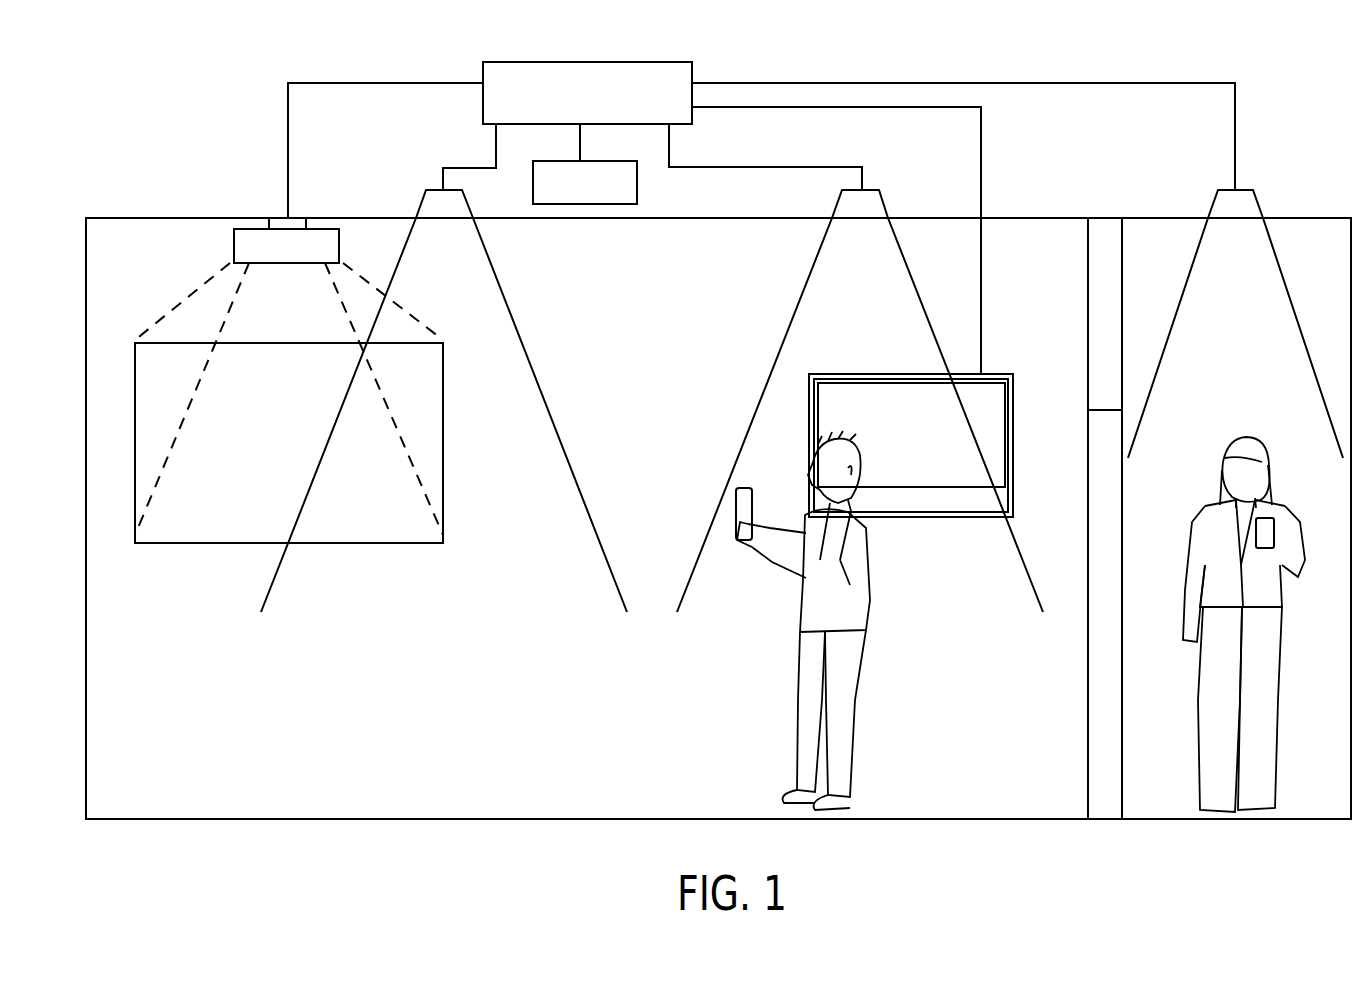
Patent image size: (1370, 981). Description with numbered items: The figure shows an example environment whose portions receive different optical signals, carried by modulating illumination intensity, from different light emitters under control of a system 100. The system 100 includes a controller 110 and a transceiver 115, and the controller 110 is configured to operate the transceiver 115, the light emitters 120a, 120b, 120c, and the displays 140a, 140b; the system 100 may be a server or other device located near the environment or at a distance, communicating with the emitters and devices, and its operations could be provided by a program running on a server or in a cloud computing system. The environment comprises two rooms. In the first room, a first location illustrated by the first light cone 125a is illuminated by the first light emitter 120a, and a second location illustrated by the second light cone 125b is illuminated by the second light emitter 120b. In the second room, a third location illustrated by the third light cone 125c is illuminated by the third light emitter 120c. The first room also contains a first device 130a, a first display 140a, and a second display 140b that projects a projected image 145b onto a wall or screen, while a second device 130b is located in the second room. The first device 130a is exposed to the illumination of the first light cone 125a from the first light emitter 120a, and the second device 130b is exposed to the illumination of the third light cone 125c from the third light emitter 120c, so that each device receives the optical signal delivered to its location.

The system 100 is at (762, 104).
The controller 110 is at (602, 107).
The transceiver 115 is at (603, 197).
The first light emitter 120a is at (855, 220).
The second light emitter 120b is at (440, 220).
The third light emitter 120c is at (1230, 220).
The first light cone 125a is at (881, 365).
The second light cone 125b is at (487, 366).
The third light cone 125c is at (1253, 364).
The first device 130a is at (735, 512).
The second device 130b is at (1278, 525).
The first display 140a is at (960, 520).
The second display 140b is at (234, 248).
The projected image 145b is at (307, 449).